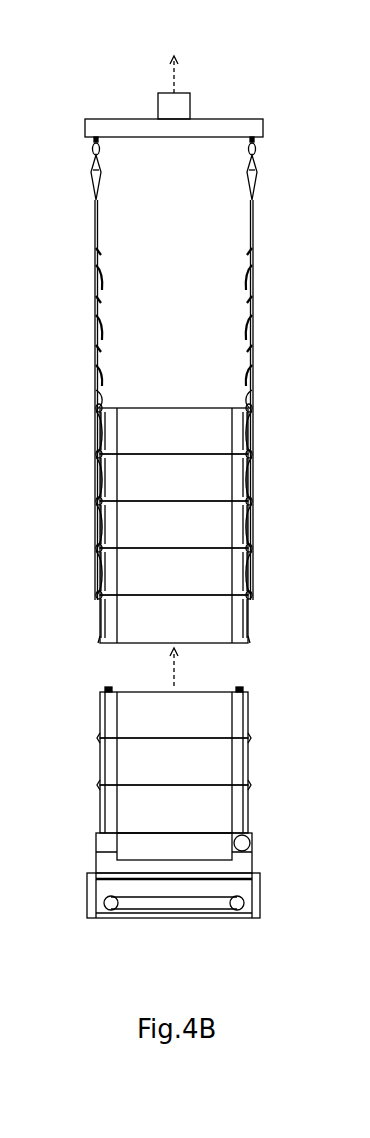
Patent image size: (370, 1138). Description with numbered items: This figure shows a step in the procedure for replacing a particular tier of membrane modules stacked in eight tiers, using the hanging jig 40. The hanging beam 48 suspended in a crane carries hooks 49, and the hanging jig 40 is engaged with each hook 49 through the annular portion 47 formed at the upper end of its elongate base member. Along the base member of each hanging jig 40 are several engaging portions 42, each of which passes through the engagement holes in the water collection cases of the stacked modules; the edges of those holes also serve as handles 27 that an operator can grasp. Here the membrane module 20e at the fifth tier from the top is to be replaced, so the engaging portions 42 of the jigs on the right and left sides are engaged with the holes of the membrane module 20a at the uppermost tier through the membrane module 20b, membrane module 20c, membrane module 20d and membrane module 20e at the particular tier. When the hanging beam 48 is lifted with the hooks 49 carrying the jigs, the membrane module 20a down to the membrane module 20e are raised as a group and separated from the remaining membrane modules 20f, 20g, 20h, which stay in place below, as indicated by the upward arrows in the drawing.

The hanging beam 48 is at (130, 118).
The hook 49 is at (256, 157).
The annular portion 47 is at (256, 187).
The hanging jig 40 is at (254, 230).
The engaging portion 42 is at (97, 408).
The handle 27 is at (252, 448).
The membrane module 20a is at (174, 431).
The membrane module 20b is at (174, 477).
The membrane module 20c is at (174, 524).
The membrane module 20d is at (174, 571).
The membrane module 20e is at (174, 619).
The membrane module 20f is at (174, 715).
The membrane module 20g is at (174, 764).
The membrane module 20h is at (174, 809).